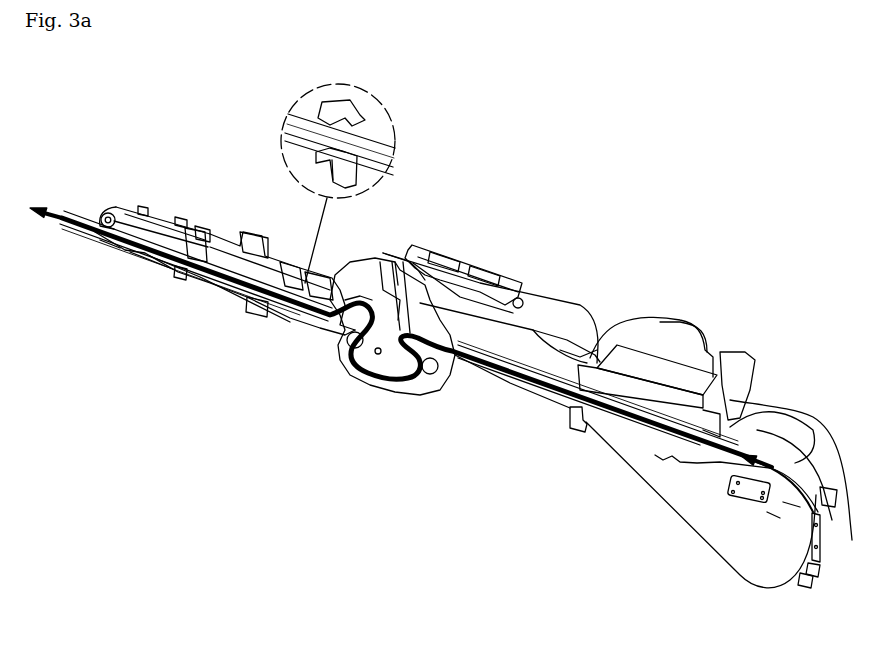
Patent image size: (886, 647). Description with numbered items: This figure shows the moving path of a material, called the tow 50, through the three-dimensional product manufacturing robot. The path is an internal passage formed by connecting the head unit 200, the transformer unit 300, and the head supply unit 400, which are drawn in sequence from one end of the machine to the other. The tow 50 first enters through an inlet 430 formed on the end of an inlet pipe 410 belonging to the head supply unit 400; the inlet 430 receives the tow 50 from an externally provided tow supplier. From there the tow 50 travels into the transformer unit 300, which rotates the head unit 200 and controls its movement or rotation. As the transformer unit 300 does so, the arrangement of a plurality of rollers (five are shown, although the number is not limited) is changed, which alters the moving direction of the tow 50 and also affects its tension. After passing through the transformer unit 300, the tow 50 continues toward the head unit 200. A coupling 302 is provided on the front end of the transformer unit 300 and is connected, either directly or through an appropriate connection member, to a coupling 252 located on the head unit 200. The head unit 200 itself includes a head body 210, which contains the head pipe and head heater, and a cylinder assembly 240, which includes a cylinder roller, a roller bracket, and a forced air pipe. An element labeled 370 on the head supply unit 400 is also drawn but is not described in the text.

The tow 50 is at (593, 400).
The head unit 200 is at (180, 294).
The head body 210 is at (162, 253).
The cylinder assembly 240 is at (148, 210).
The coupling 252 is at (320, 121).
The transformer unit 300 is at (338, 373).
The coupling 302 is at (340, 129).
The box member 370 is at (495, 285).
The head supply unit 400 is at (563, 279).
The inlet pipe 410 is at (537, 395).
The inlet 430 is at (743, 440).